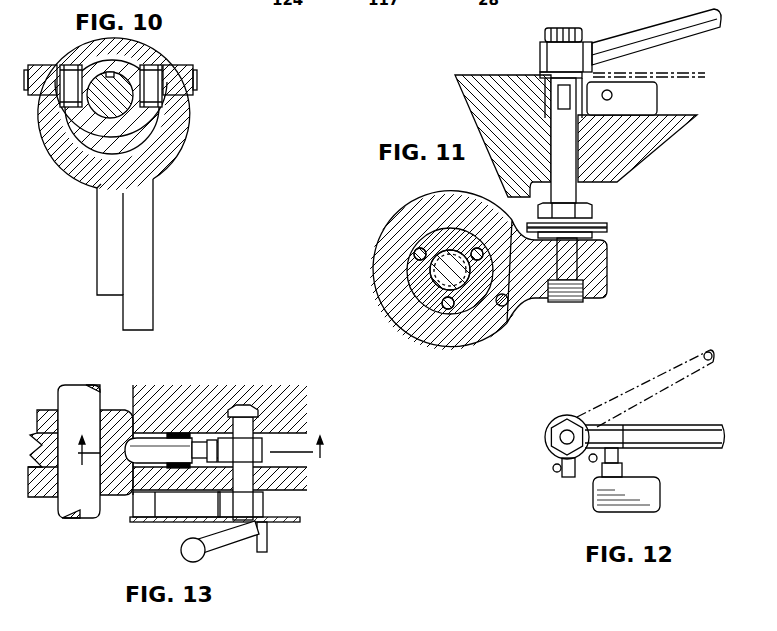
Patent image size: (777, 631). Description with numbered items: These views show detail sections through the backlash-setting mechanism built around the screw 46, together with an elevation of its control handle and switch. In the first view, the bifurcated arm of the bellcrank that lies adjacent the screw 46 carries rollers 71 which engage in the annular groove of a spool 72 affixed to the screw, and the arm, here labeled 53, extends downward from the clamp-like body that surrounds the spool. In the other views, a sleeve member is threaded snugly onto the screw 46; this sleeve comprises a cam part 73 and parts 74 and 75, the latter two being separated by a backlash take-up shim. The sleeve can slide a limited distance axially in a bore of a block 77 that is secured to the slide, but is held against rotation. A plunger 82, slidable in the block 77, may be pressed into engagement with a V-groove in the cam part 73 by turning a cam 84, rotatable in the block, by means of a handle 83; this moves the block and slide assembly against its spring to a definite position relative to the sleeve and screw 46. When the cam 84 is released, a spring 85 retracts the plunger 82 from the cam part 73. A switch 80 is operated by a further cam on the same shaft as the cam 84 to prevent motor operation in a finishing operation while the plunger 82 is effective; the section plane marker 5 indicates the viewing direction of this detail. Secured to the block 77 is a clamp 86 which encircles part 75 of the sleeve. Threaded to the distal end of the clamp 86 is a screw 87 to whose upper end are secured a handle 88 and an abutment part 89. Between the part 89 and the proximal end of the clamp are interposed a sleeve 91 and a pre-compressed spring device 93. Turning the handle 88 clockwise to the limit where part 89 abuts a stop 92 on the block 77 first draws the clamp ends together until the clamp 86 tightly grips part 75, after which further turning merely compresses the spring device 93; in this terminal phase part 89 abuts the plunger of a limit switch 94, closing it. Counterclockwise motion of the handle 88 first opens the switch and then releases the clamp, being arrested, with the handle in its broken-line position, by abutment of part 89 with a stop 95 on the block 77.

In FIG. 10, the screw 46 is at (130, 107).
In FIG. 11, the screw 46 is at (607, 272).
In FIG. 13, the screw 46 is at (87, 405).
In FIG. 10, the lever arm 53 is at (155, 251).
In FIG. 10, the rollers 71 is at (150, 67).
In FIG. 10, the spool 72 is at (88, 57).
In FIG. 13, the cam part 73 is at (40, 490).
In FIG. 13, the sleeve part 74 is at (48, 410).
In FIG. 11, the sleeve part 75 is at (427, 248).
In FIG. 11, the block 77 is at (500, 87).
In FIG. 13, the block 77 is at (293, 473).
In FIG. 13, the switch 80 is at (165, 523).
In FIG. 13, the plunger 82 is at (167, 497).
In FIG. 13, the handle 83 is at (227, 543).
In FIG. 13, the cam 84 is at (258, 432).
In FIG. 13, the spring 85 is at (178, 433).
In FIG. 11, the clamp 86 is at (415, 217).
In FIG. 11, the screw 87 is at (563, 298).
In FIG. 11, the handle 88 is at (658, 37).
In FIG. 12, the handle 88 is at (672, 433).
In FIG. 11, the abutment part 89 is at (558, 92).
In FIG. 12, the abutment part 89 is at (565, 478).
In FIG. 11, the sleeve 91 is at (575, 188).
In FIG. 12, the stop 92 is at (555, 469).
In FIG. 11, the pre-compressed spring device 93 is at (603, 228).
In FIG. 11, the limit switch 94 is at (643, 105).
In FIG. 12, the limit switch 94 is at (648, 495).
In FIG. 12, the stop 95 is at (592, 462).
In FIG. 13, the section line 5 is at (201, 451).